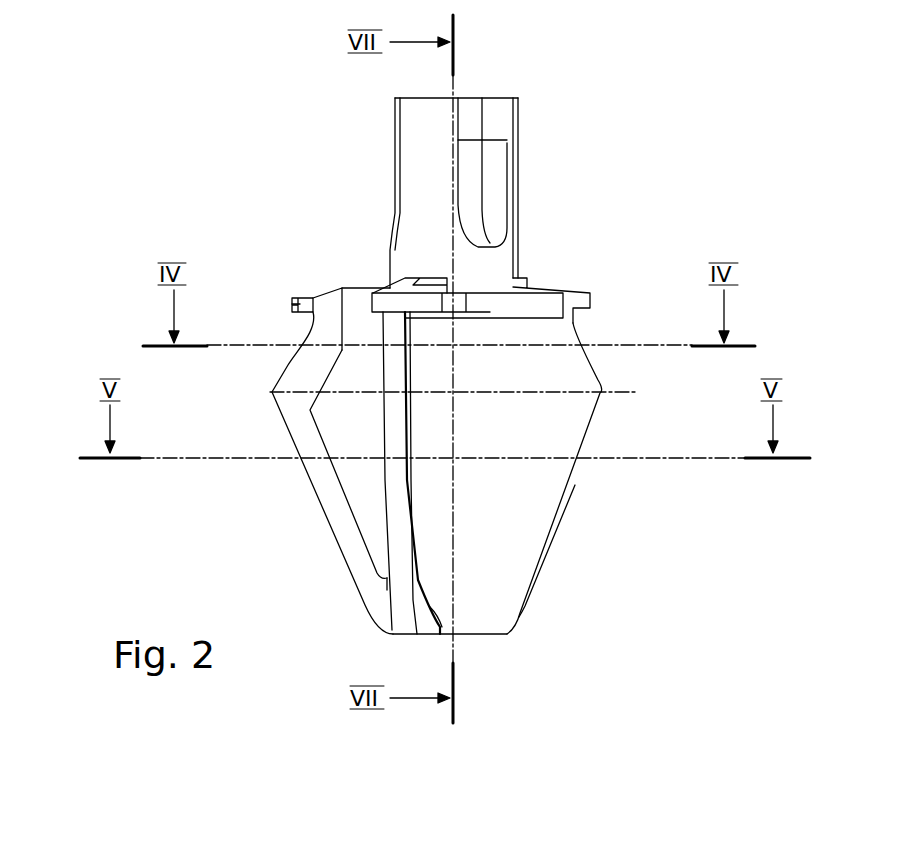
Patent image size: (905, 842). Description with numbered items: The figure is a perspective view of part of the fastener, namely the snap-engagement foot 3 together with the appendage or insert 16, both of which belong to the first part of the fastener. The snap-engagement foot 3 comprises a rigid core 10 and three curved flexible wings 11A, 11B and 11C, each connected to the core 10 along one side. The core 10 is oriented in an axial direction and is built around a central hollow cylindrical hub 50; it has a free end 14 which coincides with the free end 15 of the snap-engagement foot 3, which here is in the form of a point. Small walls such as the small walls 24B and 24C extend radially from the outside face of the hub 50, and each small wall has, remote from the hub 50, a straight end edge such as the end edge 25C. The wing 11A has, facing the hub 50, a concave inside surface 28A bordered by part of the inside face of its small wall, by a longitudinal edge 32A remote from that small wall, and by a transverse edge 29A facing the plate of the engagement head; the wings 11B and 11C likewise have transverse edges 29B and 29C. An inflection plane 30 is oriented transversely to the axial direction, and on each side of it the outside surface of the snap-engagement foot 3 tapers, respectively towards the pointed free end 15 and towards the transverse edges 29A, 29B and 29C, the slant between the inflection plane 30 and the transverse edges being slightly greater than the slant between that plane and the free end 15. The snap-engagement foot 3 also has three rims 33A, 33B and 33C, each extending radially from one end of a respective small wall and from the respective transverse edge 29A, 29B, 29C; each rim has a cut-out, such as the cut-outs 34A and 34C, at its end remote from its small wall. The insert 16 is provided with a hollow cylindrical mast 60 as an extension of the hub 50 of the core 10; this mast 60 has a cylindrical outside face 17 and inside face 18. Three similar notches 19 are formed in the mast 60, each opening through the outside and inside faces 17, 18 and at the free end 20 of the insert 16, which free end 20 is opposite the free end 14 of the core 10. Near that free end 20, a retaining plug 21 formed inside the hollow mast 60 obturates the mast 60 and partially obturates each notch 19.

The snap-engagement foot 3 is at (700, 217).
The rigid core 10 is at (377, 610).
The curved flexible wing 11A is at (360, 505).
The curved flexible wing 11B is at (550, 561).
The curved flexible wing 11C is at (540, 500).
The free end of the core 14 is at (417, 635).
The free end of the snap-engagement foot 15 is at (490, 648).
The insert 16 is at (505, 149).
The outside face of the mast 17 is at (420, 197).
The inside face of the mast 18 is at (418, 178).
The notch 19 is at (384, 125).
The free end of the insert 20 is at (520, 88).
The retaining plug 21 is at (468, 110).
The small wall 24B is at (583, 318).
The small wall 24C is at (387, 525).
The end edge 25C is at (400, 506).
The inside surface 28A is at (334, 430).
The transverse edge 29A is at (348, 285).
The transverse edge 29B is at (534, 283).
The transverse edge 29C is at (422, 280).
The inflection plane 30 is at (620, 393).
The longitudinal edge 32A is at (305, 375).
The rim 33A is at (292, 302).
The rim 33B is at (598, 295).
The rim 33C is at (427, 300).
The cut-out 34A is at (292, 310).
The cut-out 34C is at (530, 325).
The hollow cylindrical hub 50 is at (393, 583).
The hollow cylindrical mast 60 is at (492, 168).